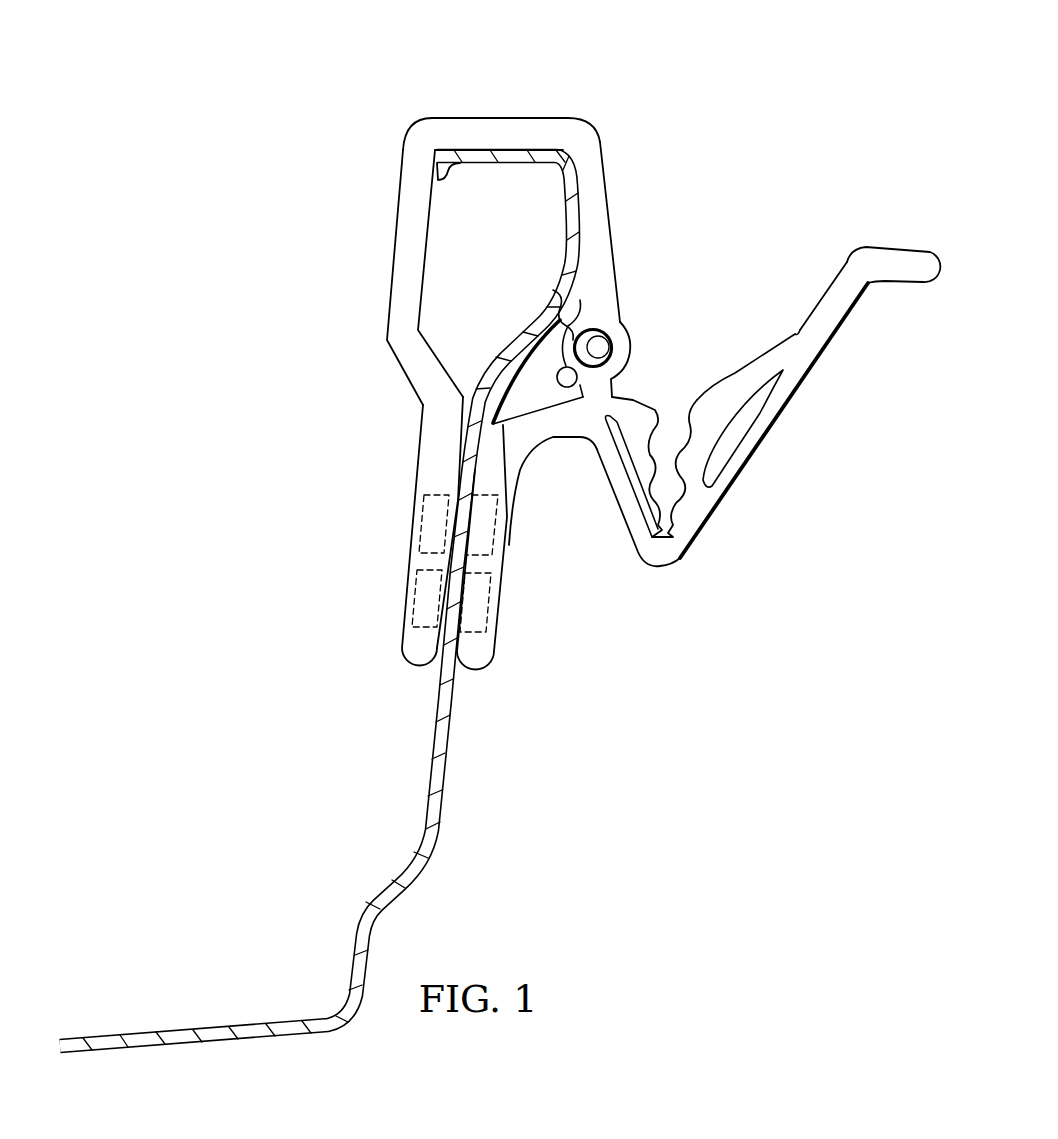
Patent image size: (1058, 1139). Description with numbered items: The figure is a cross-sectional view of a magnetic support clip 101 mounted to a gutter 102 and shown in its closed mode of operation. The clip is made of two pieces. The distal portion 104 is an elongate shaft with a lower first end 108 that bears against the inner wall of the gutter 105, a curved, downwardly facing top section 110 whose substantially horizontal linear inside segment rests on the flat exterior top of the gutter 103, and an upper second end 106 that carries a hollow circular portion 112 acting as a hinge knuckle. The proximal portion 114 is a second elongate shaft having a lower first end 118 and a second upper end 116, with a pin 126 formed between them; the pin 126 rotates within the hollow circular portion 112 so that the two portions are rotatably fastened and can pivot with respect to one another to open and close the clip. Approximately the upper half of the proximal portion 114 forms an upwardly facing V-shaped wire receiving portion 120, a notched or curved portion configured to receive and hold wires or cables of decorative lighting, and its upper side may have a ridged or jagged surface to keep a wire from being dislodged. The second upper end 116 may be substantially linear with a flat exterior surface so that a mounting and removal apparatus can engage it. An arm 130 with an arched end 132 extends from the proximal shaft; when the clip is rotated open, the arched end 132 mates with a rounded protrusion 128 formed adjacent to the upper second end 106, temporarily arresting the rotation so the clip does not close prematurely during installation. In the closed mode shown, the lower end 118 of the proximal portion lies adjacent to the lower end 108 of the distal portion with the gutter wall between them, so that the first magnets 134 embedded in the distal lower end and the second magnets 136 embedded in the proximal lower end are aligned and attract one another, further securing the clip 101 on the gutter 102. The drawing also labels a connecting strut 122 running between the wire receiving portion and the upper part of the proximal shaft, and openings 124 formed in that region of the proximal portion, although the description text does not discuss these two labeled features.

The magnetic support clip 101 is at (666, 53).
The gutter 102 is at (288, 1034).
The exterior top of the gutter 103 is at (498, 160).
The distal portion 104 is at (393, 240).
The inner wall of a gutter 105 is at (465, 467).
The upper second end 106 is at (610, 350).
The lower first end 108 is at (403, 658).
The top section 110 is at (478, 124).
The hollow circular portion 112 is at (620, 330).
The proximal portion 114 is at (815, 365).
The second upper end 116 is at (905, 258).
The lower first end 118 is at (488, 662).
The wire receiving portion 120 is at (660, 568).
The strut 122 is at (812, 325).
The slot 124 is at (690, 428).
The pin 126 is at (612, 368).
The rounded protrusion 128 is at (530, 330).
The arm 130 is at (480, 375).
The arched end 132 is at (553, 290).
The first magnets 134 is at (413, 597).
The second magnets 136 is at (525, 617).